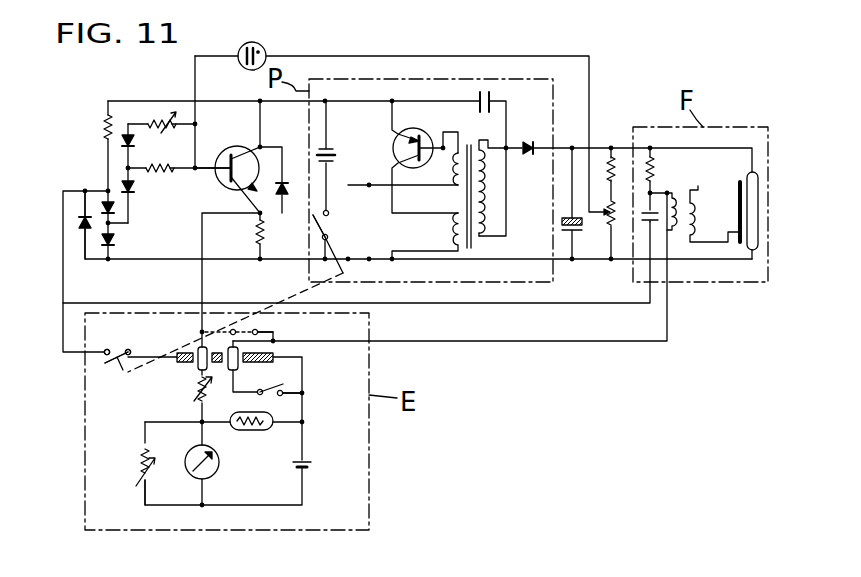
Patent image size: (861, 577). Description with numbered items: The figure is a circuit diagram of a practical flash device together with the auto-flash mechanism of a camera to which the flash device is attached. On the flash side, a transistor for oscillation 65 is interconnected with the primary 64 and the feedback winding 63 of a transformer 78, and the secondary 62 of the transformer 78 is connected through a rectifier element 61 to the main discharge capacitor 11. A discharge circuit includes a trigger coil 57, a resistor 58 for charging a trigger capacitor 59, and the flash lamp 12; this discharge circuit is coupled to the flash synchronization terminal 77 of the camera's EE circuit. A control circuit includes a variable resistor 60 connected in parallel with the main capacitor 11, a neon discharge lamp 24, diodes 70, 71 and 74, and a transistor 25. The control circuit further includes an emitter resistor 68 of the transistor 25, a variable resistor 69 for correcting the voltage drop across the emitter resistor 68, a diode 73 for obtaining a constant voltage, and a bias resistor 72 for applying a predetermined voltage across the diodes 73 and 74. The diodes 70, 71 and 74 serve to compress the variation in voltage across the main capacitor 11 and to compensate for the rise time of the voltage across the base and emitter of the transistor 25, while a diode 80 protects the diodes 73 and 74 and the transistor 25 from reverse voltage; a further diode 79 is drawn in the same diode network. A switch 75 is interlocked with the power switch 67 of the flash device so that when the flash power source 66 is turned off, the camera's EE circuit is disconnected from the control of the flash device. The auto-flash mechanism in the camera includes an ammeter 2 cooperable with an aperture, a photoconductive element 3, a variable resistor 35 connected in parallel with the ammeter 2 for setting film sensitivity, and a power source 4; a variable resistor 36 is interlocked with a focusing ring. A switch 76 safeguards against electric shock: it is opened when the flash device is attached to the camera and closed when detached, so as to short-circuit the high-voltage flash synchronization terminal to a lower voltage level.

The ammeter 2 is at (219, 462).
The photoconductive element 3 is at (270, 427).
The power source 4 is at (312, 463).
The main discharge capacitor 11 is at (573, 226).
The flash lamp 12 is at (752, 170).
The neon discharge lamp 24 is at (261, 47).
The transistor 25 is at (228, 150).
The variable resistor 35 is at (138, 458).
The variable resistor 36 is at (194, 389).
The trigger coil 57 is at (694, 190).
The resistor 58 is at (643, 162).
The trigger capacitor 59 is at (652, 212).
The variable resistor 60 is at (617, 232).
The rectifier element 61 is at (531, 154).
The secondary 62 is at (484, 205).
The feedback winding 63 is at (452, 183).
The primary 64 is at (452, 230).
The transistor for oscillation 65 is at (392, 144).
The power source 66 is at (336, 148).
The power switch 67 is at (314, 243).
The emitter resistor 68 is at (254, 234).
The variable resistor 69 is at (156, 119).
The diode 70 is at (138, 142).
The diode 71 is at (140, 192).
The bias resistor 72 is at (102, 124).
The diode 73 is at (104, 201).
The diode 74 is at (116, 241).
The switch 75 is at (125, 347).
The switch 76 is at (262, 331).
The flash synchronization terminal 77 is at (309, 388).
The transformer 78 is at (472, 143).
The diode 79 is at (78, 222).
The diode 80 is at (283, 198).